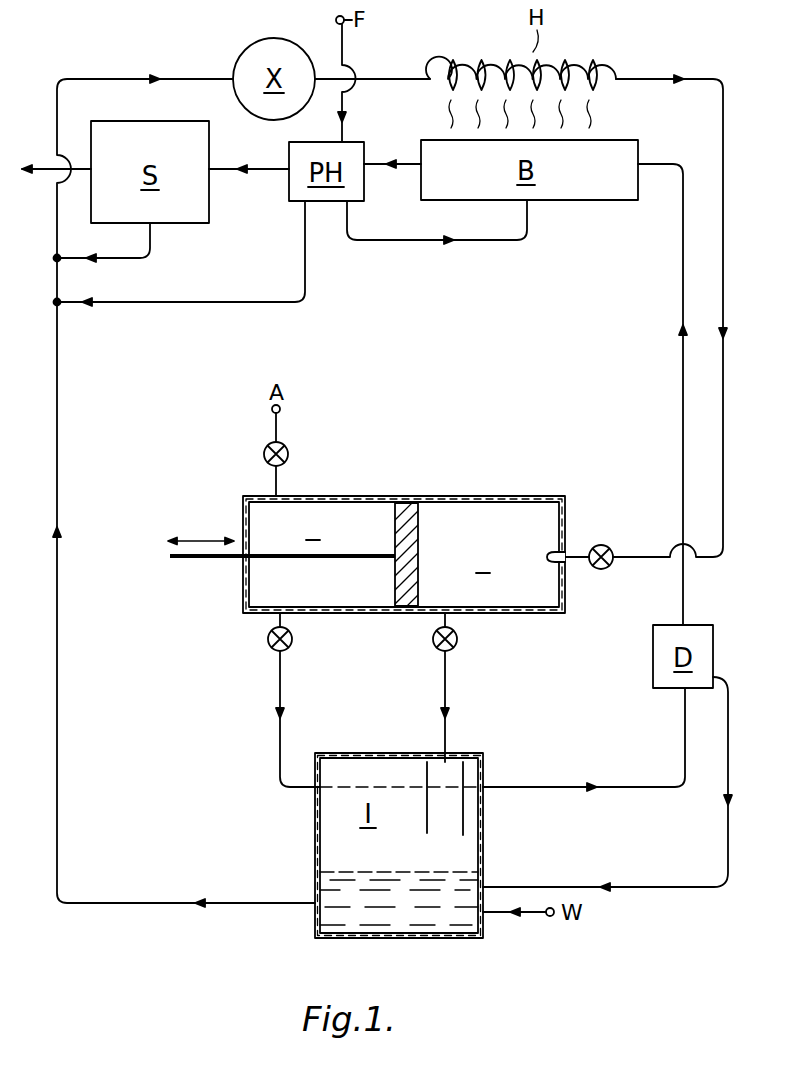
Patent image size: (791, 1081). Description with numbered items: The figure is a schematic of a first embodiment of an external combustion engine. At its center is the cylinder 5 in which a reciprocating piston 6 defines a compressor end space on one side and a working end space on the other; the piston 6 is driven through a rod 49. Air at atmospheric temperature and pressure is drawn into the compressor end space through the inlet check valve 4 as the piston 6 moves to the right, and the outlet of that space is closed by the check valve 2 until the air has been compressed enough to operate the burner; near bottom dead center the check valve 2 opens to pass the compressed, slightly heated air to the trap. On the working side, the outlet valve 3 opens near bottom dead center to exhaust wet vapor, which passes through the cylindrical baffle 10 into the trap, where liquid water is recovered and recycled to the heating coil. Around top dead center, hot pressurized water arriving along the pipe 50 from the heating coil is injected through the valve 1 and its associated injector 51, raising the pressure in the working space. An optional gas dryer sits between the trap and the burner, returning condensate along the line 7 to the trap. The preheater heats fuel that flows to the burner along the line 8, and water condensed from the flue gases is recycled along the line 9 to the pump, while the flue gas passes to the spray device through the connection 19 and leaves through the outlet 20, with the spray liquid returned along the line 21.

The valve 1 is at (604, 569).
The check valve 2 is at (269, 647).
The outlet valve 3 is at (456, 642).
The inlet check valve 4 is at (289, 455).
The cylinder 5 is at (404, 533).
The piston 6 is at (405, 503).
The line 7 is at (726, 768).
The line 8 is at (484, 243).
The line 9 is at (173, 304).
The cylindrical baffle 10 is at (466, 772).
The line from preheater to separator 19 is at (229, 170).
The outlet line from separator 20 is at (79, 171).
The return line from separator 21 is at (151, 239).
The piston rod 49 is at (214, 558).
The pipe 50 is at (722, 284).
The injector 51 is at (570, 550).